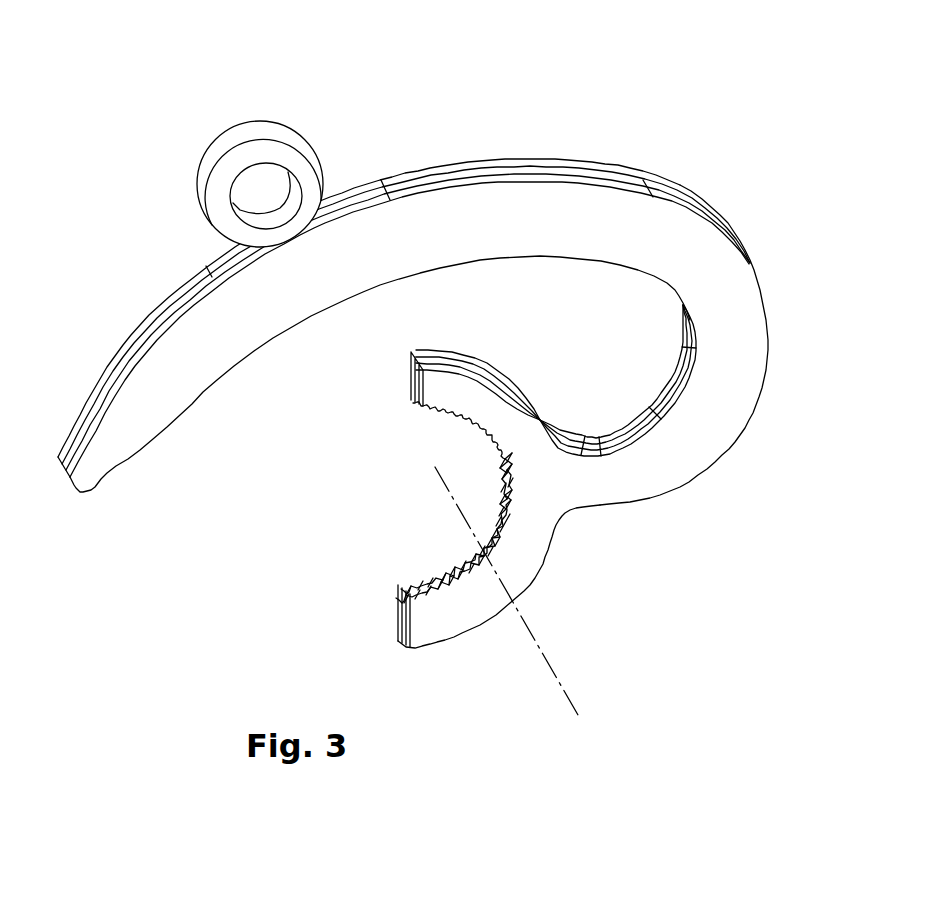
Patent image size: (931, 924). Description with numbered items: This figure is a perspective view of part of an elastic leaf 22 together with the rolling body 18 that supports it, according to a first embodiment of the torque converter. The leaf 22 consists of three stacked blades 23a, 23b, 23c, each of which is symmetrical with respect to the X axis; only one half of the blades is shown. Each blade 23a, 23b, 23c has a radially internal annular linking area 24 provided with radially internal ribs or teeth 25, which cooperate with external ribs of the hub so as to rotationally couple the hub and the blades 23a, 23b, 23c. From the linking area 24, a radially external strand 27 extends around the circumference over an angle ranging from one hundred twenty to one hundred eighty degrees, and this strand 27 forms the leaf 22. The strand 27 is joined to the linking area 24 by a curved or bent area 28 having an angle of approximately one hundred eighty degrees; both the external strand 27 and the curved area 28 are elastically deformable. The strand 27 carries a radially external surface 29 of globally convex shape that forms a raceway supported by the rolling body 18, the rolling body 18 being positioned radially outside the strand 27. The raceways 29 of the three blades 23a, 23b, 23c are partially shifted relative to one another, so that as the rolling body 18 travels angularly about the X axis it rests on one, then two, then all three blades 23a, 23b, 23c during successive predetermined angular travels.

The rolling body 18 is at (262, 135).
The elastic leaf 22 is at (424, 307).
The blade 23a is at (107, 368).
The blade 23b is at (92, 408).
The blade 23c is at (138, 407).
The radially internal annular linking area 24 is at (498, 527).
The radially internal ribs or teeth 25 is at (433, 597).
The radially external strand 27 is at (267, 295).
The curved area 28 is at (707, 300).
The radially external surface (raceway) 29 is at (398, 351).
The X axis X is at (563, 685).